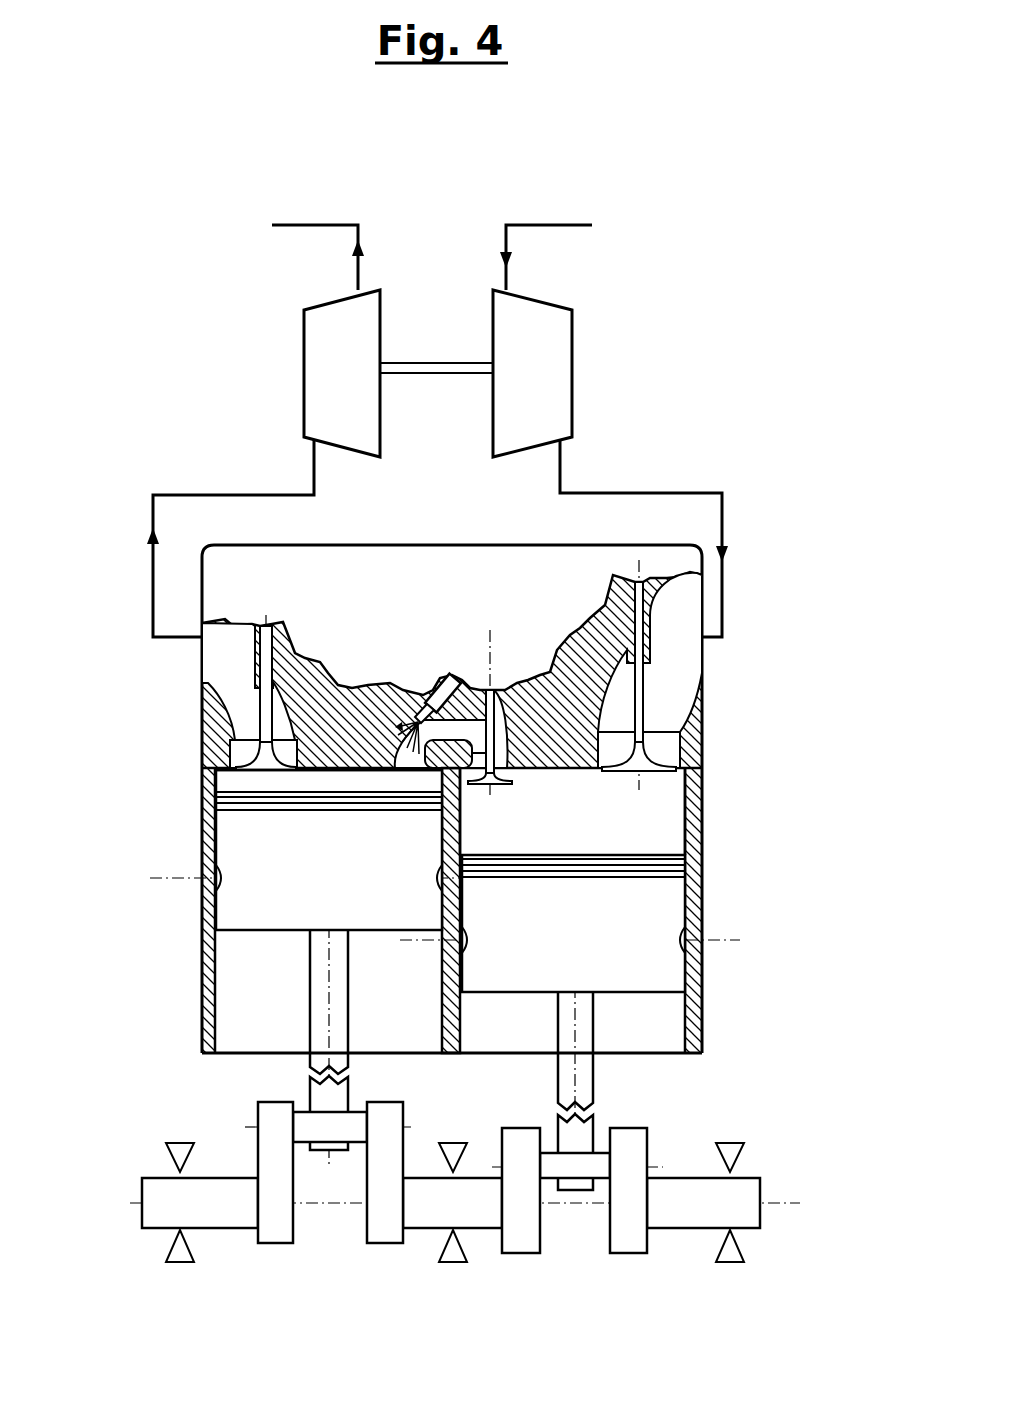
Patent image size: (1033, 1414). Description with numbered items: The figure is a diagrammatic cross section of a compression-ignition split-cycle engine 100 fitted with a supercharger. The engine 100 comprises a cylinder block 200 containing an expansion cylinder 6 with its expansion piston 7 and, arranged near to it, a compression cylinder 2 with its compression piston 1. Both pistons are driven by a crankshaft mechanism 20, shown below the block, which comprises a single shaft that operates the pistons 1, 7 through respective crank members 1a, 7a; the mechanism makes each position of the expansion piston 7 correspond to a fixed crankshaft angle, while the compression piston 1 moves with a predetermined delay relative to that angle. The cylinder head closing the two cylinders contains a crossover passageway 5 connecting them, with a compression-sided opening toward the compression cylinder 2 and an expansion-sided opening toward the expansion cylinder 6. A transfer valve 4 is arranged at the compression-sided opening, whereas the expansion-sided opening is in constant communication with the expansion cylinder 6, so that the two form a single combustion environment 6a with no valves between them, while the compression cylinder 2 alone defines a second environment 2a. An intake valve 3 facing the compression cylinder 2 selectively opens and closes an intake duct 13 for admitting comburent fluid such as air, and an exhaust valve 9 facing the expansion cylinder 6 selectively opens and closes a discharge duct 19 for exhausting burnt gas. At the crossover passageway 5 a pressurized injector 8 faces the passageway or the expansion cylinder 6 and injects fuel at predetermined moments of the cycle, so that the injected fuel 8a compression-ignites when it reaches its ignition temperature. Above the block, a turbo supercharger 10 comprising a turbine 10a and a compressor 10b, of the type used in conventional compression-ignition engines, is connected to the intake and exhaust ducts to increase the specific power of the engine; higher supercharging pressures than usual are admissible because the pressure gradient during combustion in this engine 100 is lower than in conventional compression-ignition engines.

The compression piston 1 is at (672, 890).
The crank member 1a is at (588, 1073).
The compression cylinder 2 is at (677, 1018).
The second environment 2a is at (658, 832).
The intake valve 3 is at (645, 687).
The transfer valve 4 is at (496, 712).
The crossover passageway 5 is at (400, 724).
The expansion cylinder 6 is at (228, 990).
The single combustion environment 6a is at (233, 783).
The expansion piston 7 is at (232, 833).
The crank member 7a is at (315, 1022).
The injector 8 is at (438, 695).
The injected fuel 8a is at (418, 718).
The exhaust valve 9 is at (258, 728).
The turbo supercharger 10 is at (627, 256).
The turbine 10a is at (312, 352).
The compressor 10b is at (562, 360).
The intake duct 13 is at (698, 649).
The discharge duct 19 is at (217, 662).
The crankshaft mechanism 20 is at (683, 1161).
The engine 100 is at (760, 467).
The cylinder block 200 is at (461, 533).